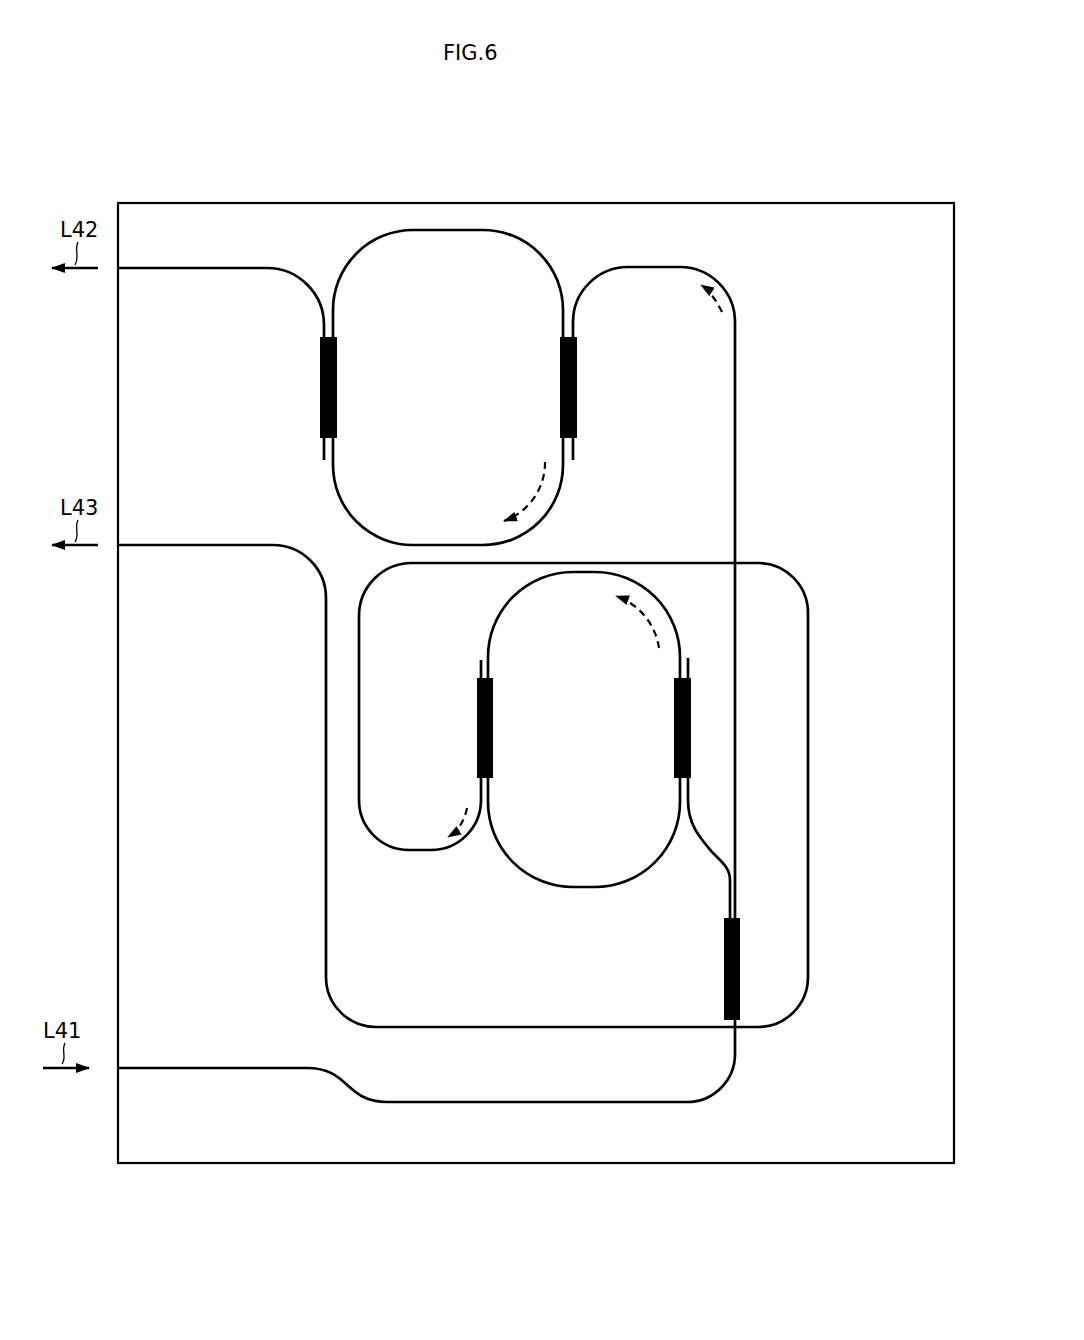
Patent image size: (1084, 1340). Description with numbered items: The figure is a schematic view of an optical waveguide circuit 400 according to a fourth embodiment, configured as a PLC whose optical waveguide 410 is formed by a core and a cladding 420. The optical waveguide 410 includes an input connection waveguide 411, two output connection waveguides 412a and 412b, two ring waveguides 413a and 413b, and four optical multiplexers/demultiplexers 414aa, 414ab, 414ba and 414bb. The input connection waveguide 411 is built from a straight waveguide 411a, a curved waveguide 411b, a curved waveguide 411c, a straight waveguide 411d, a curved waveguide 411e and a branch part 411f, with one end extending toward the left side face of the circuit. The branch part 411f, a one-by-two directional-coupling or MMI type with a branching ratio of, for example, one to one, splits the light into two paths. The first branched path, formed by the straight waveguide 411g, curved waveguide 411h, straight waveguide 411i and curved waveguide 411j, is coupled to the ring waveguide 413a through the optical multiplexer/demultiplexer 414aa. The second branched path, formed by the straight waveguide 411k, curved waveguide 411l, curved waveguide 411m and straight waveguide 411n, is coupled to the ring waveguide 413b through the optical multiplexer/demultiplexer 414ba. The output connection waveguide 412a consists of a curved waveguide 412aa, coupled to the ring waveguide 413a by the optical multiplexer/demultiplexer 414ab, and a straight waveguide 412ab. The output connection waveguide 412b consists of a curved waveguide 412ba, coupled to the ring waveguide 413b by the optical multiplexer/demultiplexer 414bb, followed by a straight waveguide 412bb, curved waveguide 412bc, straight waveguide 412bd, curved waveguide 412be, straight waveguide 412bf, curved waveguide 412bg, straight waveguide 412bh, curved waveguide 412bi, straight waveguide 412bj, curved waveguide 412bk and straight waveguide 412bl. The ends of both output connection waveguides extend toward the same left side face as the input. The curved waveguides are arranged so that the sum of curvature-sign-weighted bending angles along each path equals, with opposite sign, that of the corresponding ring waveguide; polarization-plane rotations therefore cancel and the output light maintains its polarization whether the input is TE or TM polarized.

The optical waveguide circuit 400 is at (912, 172).
The optical waveguide 410 is at (527, 222).
The input connection waveguide 411 is at (565, 1122).
The straight waveguide 411a is at (172, 1072).
The curved waveguide 411b is at (331, 1077).
The curved waveguide 411c is at (382, 1104).
The straight waveguide 411d is at (646, 1105).
The curved waveguide 411e is at (720, 1086).
The branch part 411f is at (740, 962).
The straight waveguide 411g is at (737, 494).
The curved waveguide 411h is at (722, 284).
The straight waveguide 411i is at (653, 266).
The curved waveguide 411j is at (581, 290).
The straight waveguide 411k is at (728, 898).
The curved waveguide 411l is at (717, 862).
The curved waveguide 411m is at (694, 824).
The straight waveguide 411n is at (691, 784).
The output connection waveguide 412a is at (234, 248).
The curved waveguide 412aa is at (308, 283).
The straight waveguide 412ab is at (197, 274).
The output connection waveguide 412b is at (225, 500).
The curved waveguide 412ba is at (420, 845).
The straight waveguide 412bb is at (361, 689).
The curved waveguide 412bc is at (370, 592).
The straight waveguide 412bd is at (638, 560).
The curved waveguide 412be is at (797, 578).
The straight waveguide 412bf is at (810, 722).
The curved waveguide 412bg is at (797, 1002).
The straight waveguide 412bh is at (540, 1032).
The curved waveguide 412bi is at (337, 1011).
The straight waveguide 412bj is at (325, 748).
The curved waveguide 412bk is at (304, 567).
The straight waveguide 412bl is at (195, 550).
The ring waveguide 413a is at (448, 218).
The ring waveguide 413b is at (530, 606).
The optical multiplexer/demultiplexer 414aa is at (560, 400).
The optical multiplexer/demultiplexer 414ab is at (338, 354).
The optical multiplexer/demultiplexer 414ba is at (674, 747).
The optical multiplexer/demultiplexer 414bb is at (494, 715).
The cladding 420 is at (833, 222).